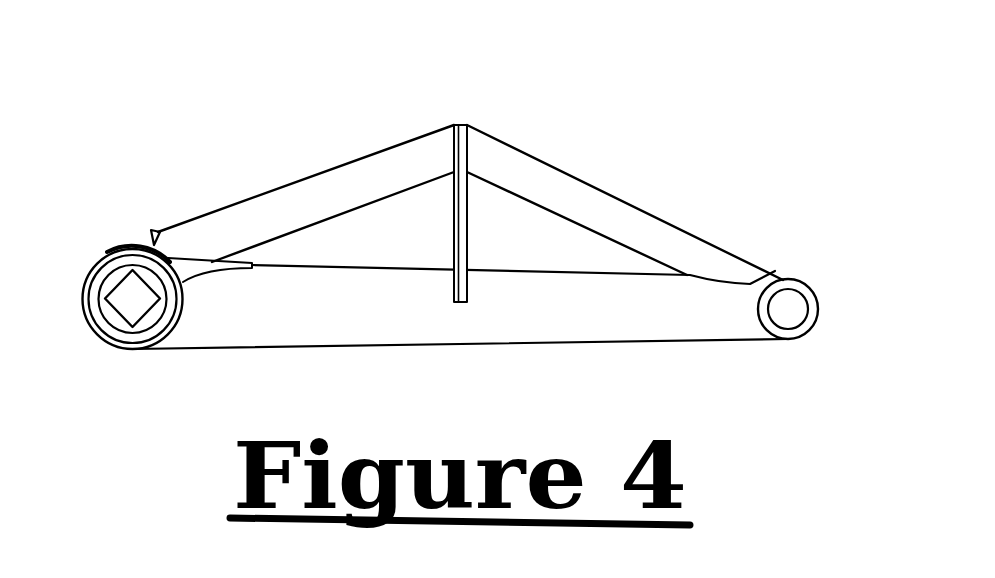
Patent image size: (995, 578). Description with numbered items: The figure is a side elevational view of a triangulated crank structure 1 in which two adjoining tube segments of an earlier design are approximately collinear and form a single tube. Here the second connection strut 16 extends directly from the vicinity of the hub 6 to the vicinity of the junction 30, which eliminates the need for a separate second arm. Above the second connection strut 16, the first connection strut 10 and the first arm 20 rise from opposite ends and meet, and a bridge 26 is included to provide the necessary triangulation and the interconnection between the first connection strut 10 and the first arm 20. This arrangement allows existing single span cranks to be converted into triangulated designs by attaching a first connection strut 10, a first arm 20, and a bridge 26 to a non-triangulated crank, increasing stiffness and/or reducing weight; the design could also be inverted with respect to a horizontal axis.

The triangulated crank structure 1 is at (250, 88).
The hub 6 is at (108, 250).
The first connection strut 10 is at (362, 207).
The second connection strut 16 is at (381, 344).
The first arm 20 is at (583, 173).
The bridge 26 is at (468, 237).
The junction 30 is at (764, 280).